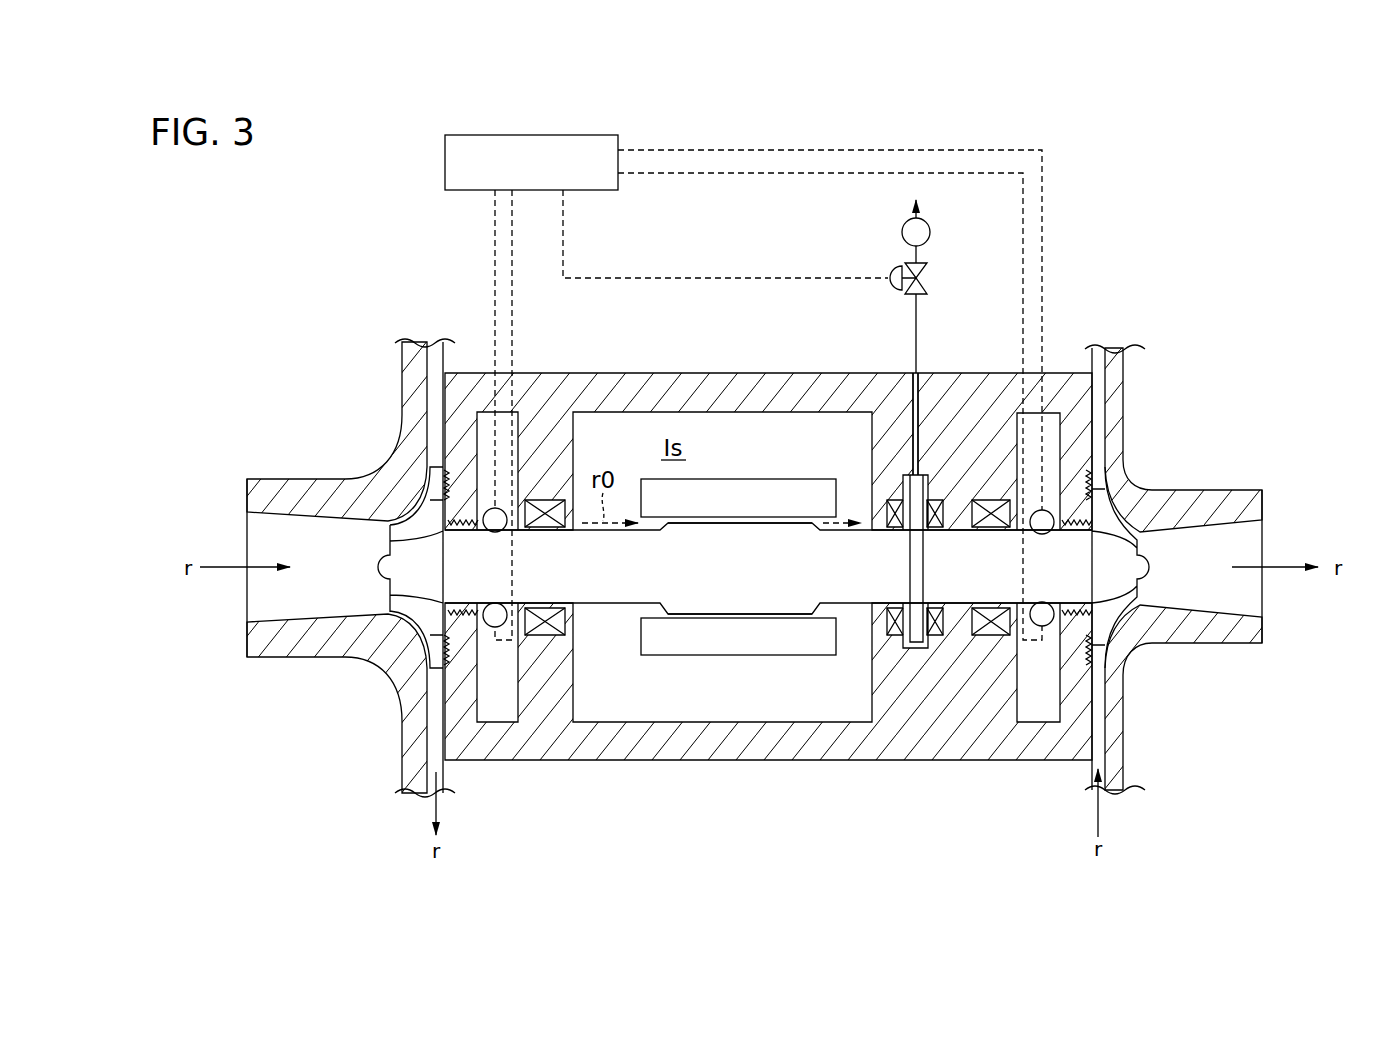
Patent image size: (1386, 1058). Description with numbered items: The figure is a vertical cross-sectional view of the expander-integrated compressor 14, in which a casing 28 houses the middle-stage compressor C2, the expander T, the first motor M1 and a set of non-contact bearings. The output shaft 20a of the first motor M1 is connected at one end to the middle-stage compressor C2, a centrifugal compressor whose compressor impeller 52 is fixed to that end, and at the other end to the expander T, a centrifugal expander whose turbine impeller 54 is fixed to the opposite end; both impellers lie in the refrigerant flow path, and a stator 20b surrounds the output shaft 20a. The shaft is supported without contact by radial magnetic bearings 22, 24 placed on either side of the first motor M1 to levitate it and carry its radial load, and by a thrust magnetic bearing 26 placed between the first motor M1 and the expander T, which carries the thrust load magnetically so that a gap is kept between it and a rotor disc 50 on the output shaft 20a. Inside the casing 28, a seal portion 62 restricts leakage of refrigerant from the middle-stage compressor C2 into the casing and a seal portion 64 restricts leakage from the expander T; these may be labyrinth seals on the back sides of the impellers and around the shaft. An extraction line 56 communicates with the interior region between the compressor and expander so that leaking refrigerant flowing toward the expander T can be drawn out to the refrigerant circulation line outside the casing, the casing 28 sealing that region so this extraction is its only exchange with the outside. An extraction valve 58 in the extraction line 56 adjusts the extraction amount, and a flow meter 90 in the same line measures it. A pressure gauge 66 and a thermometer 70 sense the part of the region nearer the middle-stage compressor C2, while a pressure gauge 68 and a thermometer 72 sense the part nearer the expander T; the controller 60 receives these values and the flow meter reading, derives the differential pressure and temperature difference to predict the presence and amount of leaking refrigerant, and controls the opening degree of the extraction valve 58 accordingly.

The expander-integrated compressor 14 is at (716, 317).
The output shaft 20a is at (611, 592).
The stator 20b is at (737, 648).
The radial magnetic bearing 22 is at (545, 637).
The radial magnetic bearing 24 is at (991, 636).
The thrust magnetic bearing 26 is at (894, 636).
The casing 28 is at (639, 386).
The rotor disc 50 is at (917, 649).
The compressor impeller 52 is at (384, 671).
The turbine impeller 54 is at (1118, 612).
The extraction line 56 is at (917, 372).
The extraction valve 58 is at (926, 275).
The controller 60 is at (545, 135).
The seal portion 62 is at (456, 648).
The seal portion 64 is at (1077, 646).
The pressure gauge 66 is at (494, 628).
The pressure gauge 68 is at (1045, 627).
The thermometer 70 is at (489, 533).
The thermometer 72 is at (1049, 535).
The flow meter 90 is at (902, 227).
The first motor M1 is at (748, 477).
The middle-stage compressor C2 is at (364, 472).
The expander T is at (1136, 466).